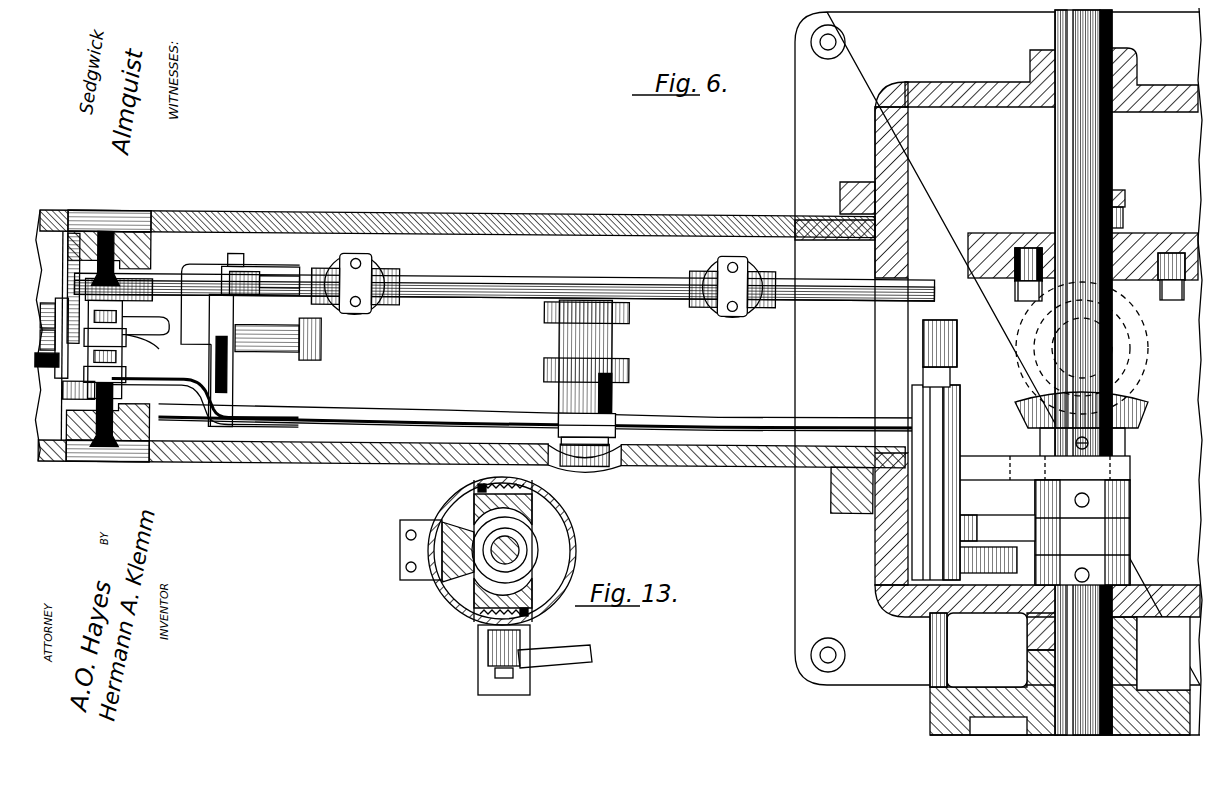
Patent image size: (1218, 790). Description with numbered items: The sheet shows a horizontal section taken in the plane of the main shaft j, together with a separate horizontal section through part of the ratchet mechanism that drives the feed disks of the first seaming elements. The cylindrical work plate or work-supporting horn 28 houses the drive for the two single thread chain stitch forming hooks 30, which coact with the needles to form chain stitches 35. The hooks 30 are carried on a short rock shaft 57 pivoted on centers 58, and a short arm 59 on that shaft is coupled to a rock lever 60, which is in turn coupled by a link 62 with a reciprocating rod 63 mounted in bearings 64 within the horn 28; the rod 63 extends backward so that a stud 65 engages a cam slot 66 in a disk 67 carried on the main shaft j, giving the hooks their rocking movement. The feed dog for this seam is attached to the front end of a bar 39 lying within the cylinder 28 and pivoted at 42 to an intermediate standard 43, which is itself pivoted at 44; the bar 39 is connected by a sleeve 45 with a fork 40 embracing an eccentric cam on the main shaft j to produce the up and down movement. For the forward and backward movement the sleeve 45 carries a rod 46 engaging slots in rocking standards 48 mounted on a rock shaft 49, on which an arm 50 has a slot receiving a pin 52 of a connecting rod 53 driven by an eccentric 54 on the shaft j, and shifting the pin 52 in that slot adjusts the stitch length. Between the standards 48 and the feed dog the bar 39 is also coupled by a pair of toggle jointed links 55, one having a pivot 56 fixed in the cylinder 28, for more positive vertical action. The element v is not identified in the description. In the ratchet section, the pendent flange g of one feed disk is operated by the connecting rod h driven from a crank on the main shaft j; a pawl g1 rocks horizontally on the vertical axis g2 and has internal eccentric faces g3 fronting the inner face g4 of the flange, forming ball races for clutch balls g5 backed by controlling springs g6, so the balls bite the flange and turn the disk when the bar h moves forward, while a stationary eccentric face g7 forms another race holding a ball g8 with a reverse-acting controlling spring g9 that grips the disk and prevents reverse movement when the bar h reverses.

In FIG. 6, the cylindrical work plate or work-supporting horn 28 is at (471, 348).
In FIG. 6, the centers 58 is at (118, 285).
In FIG. 6, the short arm 59 is at (150, 284).
In FIG. 6, the rock lever 60 is at (68, 303).
In FIG. 6, the chain stitches 35 is at (50, 303).
In FIG. 6, the single thread chain stitch forming hooks 30 is at (140, 348).
In FIG. 6, the pin 52 is at (70, 393).
In FIG. 6, the short rock shaft 57 is at (130, 398).
In FIG. 6, the link 62 is at (238, 340).
In FIG. 6, the toggle jointed links 55 is at (250, 328).
In FIG. 6, the pivot 56 is at (312, 338).
In FIG. 6, the reciprocating rod 63 is at (483, 295).
In FIG. 6, the bearings 64 is at (366, 311).
In FIG. 6, the feed bar 39 is at (430, 414).
In FIG. 6, the intermediate standard 43 is at (545, 326).
In FIG. 6, the pivot 44 is at (626, 361).
In FIG. 6, the pivot 42 is at (614, 424).
In FIG. 6, the disk 67 is at (968, 240).
In FIG. 6, the stud 65 is at (1020, 248).
In FIG. 6, the cam slot 66 is at (1176, 282).
In FIG. 6, the main shaft j is at (1075, 40).
In FIG. 6, the bevel gear v is at (1142, 404).
In FIG. 6, the fork 40 is at (1132, 470).
In FIG. 6, the eccentric 54 is at (1132, 518).
In FIG. 6, the connecting rod 53 is at (990, 527).
In FIG. 6, the arm 50 is at (1003, 585).
In FIG. 6, the sleeve 45 is at (962, 445).
In FIG. 6, the rocking standards 48 is at (962, 410).
In FIG. 6, the rod 46 is at (950, 386).
In FIG. 6, the rock shaft 49 is at (955, 330).
In FIG. 13, the pendent flange g is at (570, 538).
In FIG. 13, the pawl g1 is at (527, 560).
In FIG. 13, the vertical axis g2 is at (518, 550).
In FIG. 13, the internal eccentric faces g3 is at (472, 510).
In FIG. 13, the inner face of vertical flange g4 is at (534, 516).
In FIG. 13, the clutch balls g5 is at (478, 488).
In FIG. 13, the controlling springs g6 is at (530, 490).
In FIG. 13, the stationary eccentric face g7 is at (446, 578).
In FIG. 13, the ball g8 is at (406, 568).
In FIG. 13, the controlling spring g9 is at (400, 548).
In FIG. 13, the connecting rod h is at (592, 654).